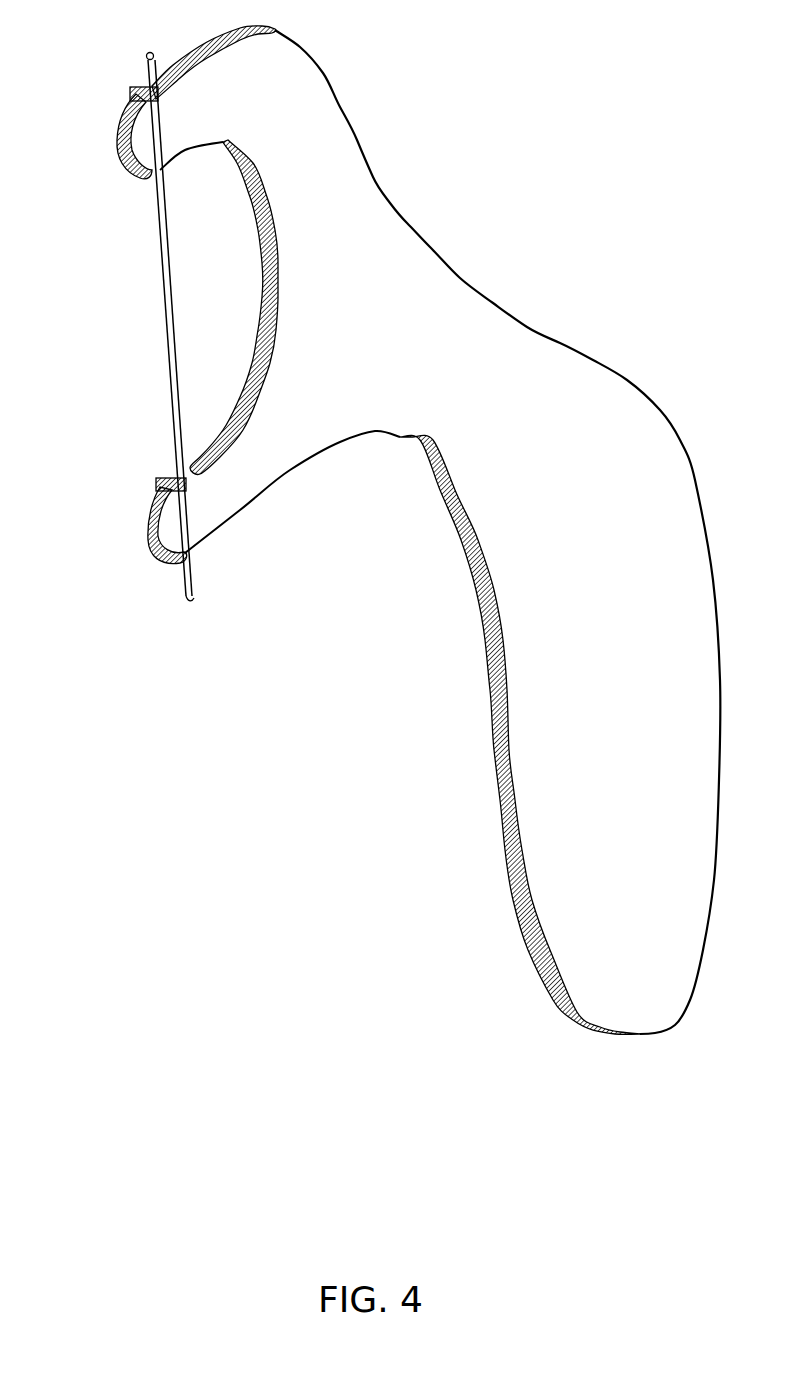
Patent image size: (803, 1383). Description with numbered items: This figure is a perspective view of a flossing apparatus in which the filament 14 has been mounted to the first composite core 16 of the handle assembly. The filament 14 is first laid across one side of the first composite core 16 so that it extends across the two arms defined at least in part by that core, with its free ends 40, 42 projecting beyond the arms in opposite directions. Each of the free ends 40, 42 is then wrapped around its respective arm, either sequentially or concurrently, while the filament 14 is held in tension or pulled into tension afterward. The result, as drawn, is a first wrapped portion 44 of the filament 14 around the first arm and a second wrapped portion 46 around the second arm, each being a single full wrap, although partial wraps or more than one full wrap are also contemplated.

The filament 14 is at (162, 345).
The first composite core 16 is at (628, 379).
The free end 40 is at (158, 53).
The free end 42 is at (194, 598).
The first wrapped portion 44 is at (130, 89).
The second wrapped portion 46 is at (160, 484).